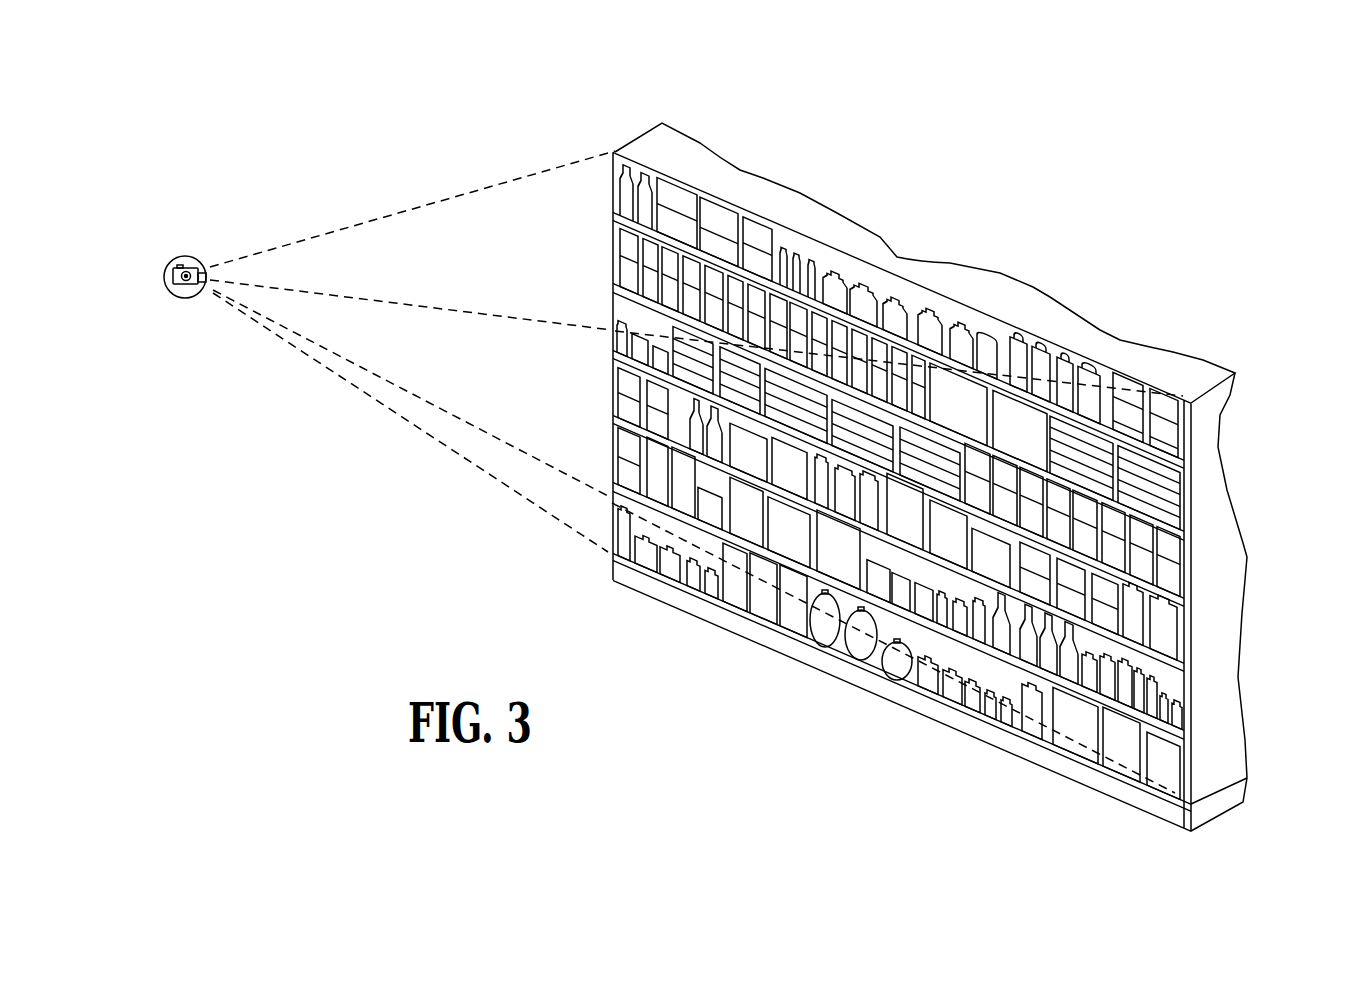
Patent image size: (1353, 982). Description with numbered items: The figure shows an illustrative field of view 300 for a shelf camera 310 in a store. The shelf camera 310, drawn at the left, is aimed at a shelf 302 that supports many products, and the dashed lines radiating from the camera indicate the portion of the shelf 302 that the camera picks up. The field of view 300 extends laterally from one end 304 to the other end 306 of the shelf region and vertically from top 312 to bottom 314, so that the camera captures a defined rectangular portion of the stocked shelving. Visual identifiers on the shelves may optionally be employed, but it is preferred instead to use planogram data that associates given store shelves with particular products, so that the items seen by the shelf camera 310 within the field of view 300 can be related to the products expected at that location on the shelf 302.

The field of view 300 is at (452, 131).
The shelf 302 is at (578, 432).
The one end 304 is at (622, 318).
The other end 306 is at (1192, 557).
The shelf camera 310 is at (180, 288).
The top 312 is at (880, 243).
The bottom 314 is at (608, 553).